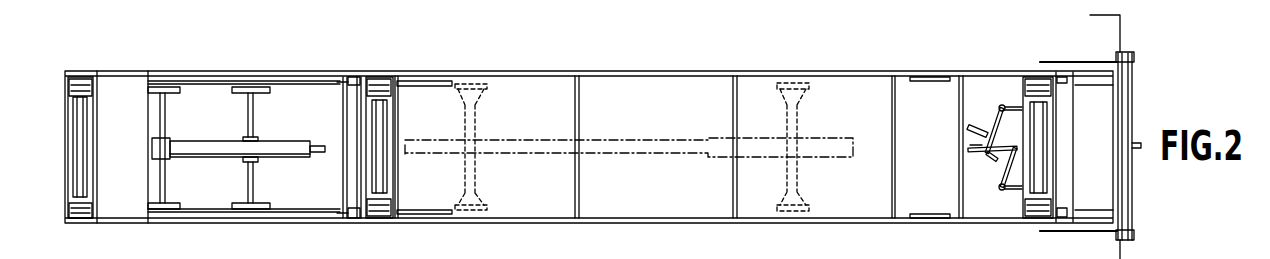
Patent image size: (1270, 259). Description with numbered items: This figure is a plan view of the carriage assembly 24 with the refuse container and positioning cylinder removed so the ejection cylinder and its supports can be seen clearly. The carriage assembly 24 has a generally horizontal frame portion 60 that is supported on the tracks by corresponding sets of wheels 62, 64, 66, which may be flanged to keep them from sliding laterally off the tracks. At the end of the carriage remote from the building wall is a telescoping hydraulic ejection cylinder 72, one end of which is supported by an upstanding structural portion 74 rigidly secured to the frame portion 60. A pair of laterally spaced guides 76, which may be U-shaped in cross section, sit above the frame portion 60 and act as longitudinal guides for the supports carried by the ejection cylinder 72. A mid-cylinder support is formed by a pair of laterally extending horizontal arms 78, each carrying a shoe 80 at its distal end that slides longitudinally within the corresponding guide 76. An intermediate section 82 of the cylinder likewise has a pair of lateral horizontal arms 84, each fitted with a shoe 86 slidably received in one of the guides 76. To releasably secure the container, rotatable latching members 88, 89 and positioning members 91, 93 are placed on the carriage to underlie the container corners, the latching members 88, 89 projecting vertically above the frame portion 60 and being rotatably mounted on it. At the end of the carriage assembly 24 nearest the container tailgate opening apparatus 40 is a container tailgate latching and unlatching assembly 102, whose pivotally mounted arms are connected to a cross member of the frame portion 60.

The carriage assembly 24 is at (593, 227).
The container tailgate opening apparatus 40 is at (1087, 235).
The frame portion 60 is at (530, 227).
The wheels 62 is at (80, 82).
The wheels 64 is at (375, 80).
The wheels 66 is at (1030, 77).
The telescoping hydraulic ejection cylinder 72 is at (293, 141).
The upstanding structural portion 74 is at (137, 73).
The guides 76 is at (280, 83).
The arms 78 is at (254, 120).
The shoe 80 is at (240, 93).
The intermediate section 82 is at (168, 153).
The arms 84 is at (165, 132).
The shoe 86 is at (175, 91).
The rotatable latching member 88 is at (353, 220).
The rotatable latching member 89 is at (355, 74).
The positioning member 91 is at (1060, 208).
The positioning member 93 is at (1062, 78).
The container tailgate latching and unlatching assembly 102 is at (983, 147).